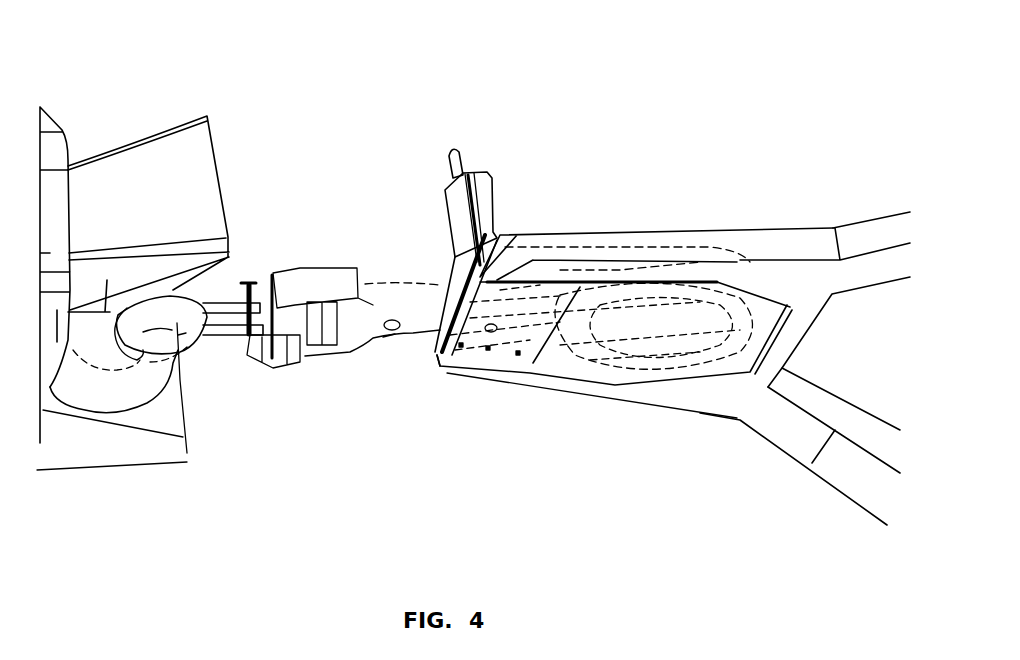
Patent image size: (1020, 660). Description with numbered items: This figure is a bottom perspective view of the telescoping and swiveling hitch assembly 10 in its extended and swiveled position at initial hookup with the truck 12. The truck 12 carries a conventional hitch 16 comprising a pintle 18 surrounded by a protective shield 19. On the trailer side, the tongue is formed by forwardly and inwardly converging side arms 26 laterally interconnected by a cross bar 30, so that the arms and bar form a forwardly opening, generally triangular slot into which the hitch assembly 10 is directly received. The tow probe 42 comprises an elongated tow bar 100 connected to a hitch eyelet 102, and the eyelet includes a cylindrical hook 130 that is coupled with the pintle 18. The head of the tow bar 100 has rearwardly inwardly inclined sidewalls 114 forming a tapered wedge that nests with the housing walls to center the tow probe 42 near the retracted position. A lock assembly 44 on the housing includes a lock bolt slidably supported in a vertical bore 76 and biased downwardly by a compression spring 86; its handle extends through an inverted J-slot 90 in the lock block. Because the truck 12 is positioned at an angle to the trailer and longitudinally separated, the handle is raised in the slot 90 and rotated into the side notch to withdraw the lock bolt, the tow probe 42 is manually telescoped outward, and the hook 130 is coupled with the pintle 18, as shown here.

The hitch assembly 10 is at (609, 401).
The truck 12 is at (905, 201).
The hitch 16 is at (187, 108).
The pintle 18 is at (195, 172).
The protective shield 19 is at (130, 397).
The side arms 26 is at (890, 225).
The cross bar 30 is at (803, 312).
The tow probe 42 is at (660, 297).
The lock assembly 44 is at (487, 180).
The vertical bore 76 is at (397, 333).
The compression spring 86 is at (450, 150).
The inverted J-slot 90 is at (483, 210).
The tow bar 100 is at (593, 307).
The hitch eyelet 102 is at (227, 345).
The inclined sidewalls 114 is at (390, 333).
The cylindrical hook 130 is at (193, 350).